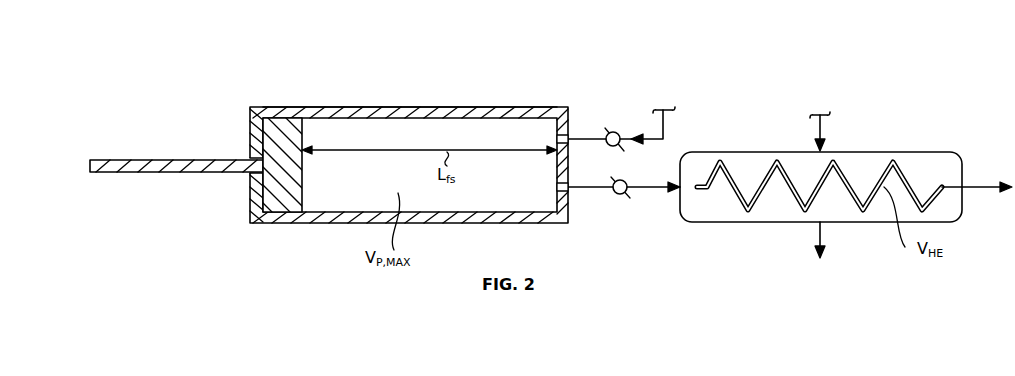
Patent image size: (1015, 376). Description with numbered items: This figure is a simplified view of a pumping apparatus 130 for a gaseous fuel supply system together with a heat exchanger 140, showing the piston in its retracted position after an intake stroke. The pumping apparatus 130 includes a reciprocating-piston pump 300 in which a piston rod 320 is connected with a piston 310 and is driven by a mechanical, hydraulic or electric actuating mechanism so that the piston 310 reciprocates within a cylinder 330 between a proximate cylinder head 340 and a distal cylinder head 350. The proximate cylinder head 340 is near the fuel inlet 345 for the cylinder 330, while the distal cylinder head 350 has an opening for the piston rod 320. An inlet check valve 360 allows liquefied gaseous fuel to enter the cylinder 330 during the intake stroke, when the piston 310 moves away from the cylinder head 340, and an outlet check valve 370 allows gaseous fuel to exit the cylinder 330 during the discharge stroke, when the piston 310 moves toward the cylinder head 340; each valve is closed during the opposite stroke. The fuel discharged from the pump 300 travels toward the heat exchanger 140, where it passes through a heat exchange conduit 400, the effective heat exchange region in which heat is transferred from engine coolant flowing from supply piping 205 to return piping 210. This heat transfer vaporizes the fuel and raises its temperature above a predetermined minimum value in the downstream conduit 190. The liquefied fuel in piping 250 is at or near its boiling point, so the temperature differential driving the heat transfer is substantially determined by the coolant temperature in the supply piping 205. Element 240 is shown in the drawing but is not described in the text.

The pumping apparatus 130 is at (591, 84).
The heat exchanger 140 is at (785, 151).
The conduit 190 is at (980, 191).
The supply piping 205 is at (826, 120).
The return piping 210 is at (826, 240).
The fluid supply line 240 is at (667, 120).
The piping 250 is at (648, 191).
The reciprocating-piston pump 300 is at (432, 106).
The piston 310 is at (302, 186).
The piston rod 320 is at (140, 173).
The cylinder 330 is at (366, 119).
The cylinder head 340 is at (560, 177).
The fuel inlet 345 is at (563, 135).
The cylinder head 350 is at (250, 140).
The inlet check valve 360 is at (616, 128).
The outlet check valve 370 is at (607, 195).
The heat exchange conduit 400 is at (906, 175).